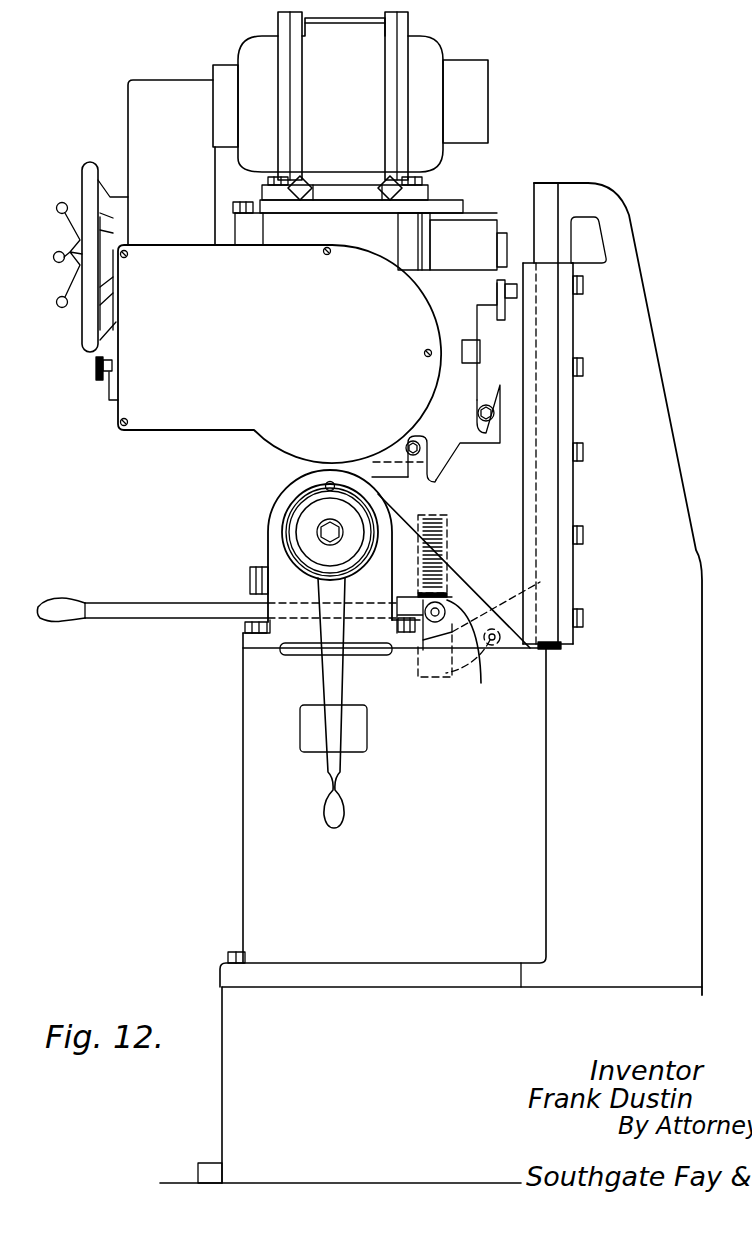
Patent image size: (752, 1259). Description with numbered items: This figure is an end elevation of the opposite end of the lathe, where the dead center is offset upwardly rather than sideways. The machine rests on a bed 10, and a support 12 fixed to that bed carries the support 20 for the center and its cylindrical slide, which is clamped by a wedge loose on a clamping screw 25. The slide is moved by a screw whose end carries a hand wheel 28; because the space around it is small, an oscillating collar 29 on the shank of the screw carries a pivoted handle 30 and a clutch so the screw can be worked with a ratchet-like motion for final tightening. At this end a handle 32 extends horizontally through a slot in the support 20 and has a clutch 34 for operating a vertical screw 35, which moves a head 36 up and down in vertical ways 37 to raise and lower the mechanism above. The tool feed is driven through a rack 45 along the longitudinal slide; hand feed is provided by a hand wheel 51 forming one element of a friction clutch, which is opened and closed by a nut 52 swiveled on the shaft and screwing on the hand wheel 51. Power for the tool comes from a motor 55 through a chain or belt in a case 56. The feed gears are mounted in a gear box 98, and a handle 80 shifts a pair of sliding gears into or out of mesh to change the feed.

The bed 10 is at (290, 1036).
The support 12 is at (405, 851).
The support 20 is at (270, 548).
The clamping screw 25 is at (250, 577).
The hand wheel 28 is at (300, 498).
The oscillating collar 29 is at (496, 647).
The pivoted handle 30 is at (345, 797).
The handle 32 is at (136, 606).
The clutch 34 is at (481, 683).
The vertical screw 35 is at (448, 546).
The head 36 is at (502, 500).
The vertical ways 37 is at (558, 422).
The rack 45 is at (480, 352).
The hand wheel 51 is at (86, 168).
The nut 52 is at (67, 250).
The motor 55 is at (340, 88).
The case 56 is at (143, 104).
The handle 80 is at (110, 394).
The gear box 98 is at (260, 350).